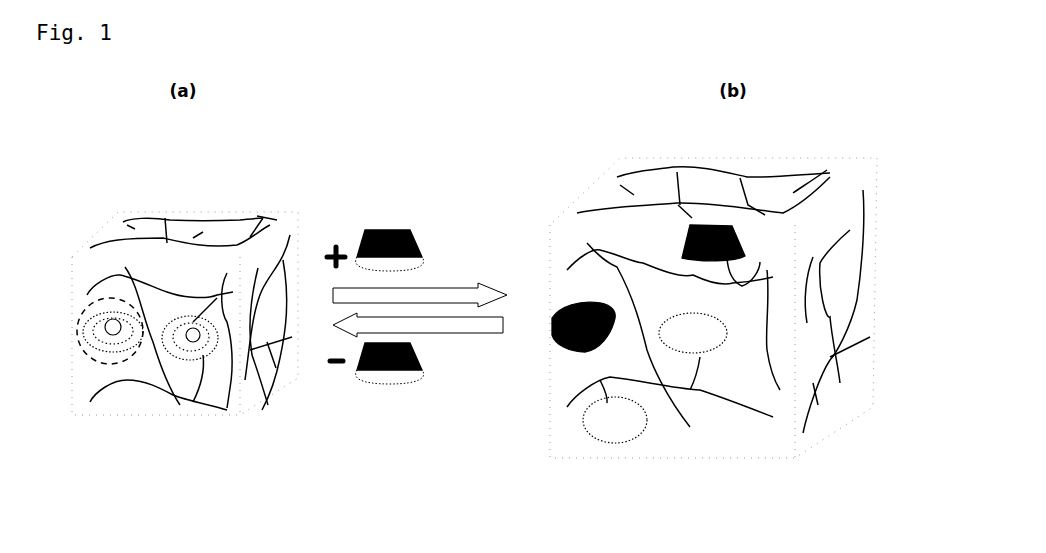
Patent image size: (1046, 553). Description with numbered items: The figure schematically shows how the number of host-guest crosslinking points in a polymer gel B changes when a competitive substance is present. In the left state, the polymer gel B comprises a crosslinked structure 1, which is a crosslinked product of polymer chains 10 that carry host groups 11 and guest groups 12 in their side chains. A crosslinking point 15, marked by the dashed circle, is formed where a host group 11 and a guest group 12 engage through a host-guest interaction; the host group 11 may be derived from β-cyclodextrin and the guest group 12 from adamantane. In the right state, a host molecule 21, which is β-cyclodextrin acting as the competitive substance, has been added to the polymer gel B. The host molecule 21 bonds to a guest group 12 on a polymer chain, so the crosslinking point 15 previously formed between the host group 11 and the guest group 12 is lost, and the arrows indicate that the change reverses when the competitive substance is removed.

The crosslinked structure 1 is at (110, 230).
The polymer chains 10 is at (197, 220).
The host group 11 is at (183, 365).
The guest group 12 is at (212, 362).
The crosslinking point 15 is at (85, 353).
The host molecule 21 is at (417, 228).
The polymer gel B is at (265, 200).